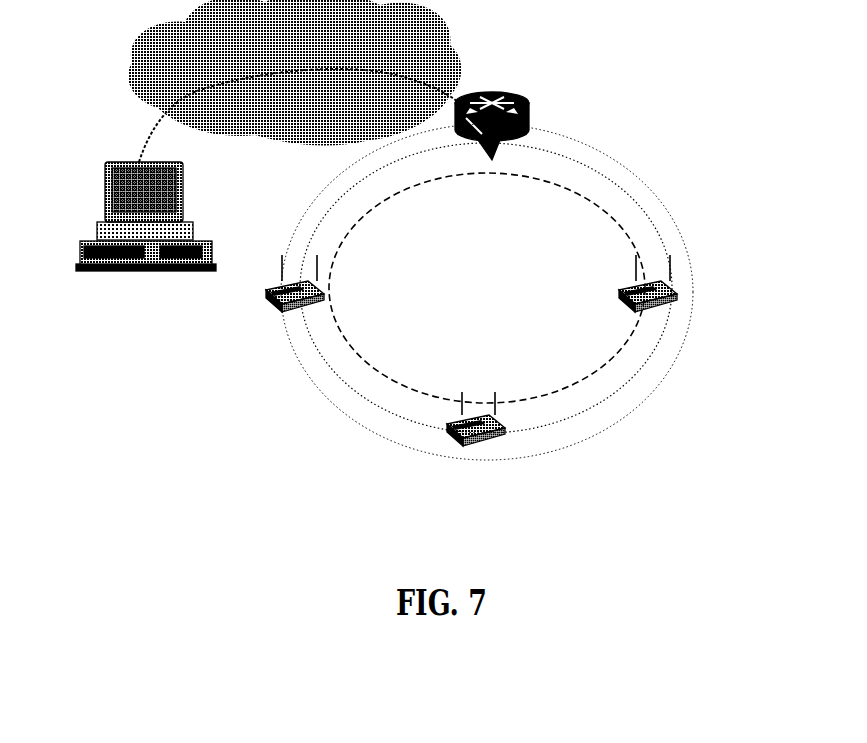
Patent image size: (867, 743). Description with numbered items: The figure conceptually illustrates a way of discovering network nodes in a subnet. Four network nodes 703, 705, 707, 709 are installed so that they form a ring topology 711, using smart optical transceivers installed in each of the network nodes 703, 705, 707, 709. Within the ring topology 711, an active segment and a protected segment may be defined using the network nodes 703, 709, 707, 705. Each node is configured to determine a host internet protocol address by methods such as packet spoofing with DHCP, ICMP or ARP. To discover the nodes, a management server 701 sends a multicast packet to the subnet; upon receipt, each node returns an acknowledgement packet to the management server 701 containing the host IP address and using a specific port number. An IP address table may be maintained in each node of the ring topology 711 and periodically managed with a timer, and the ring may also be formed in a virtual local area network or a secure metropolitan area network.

The management server 701 is at (108, 272).
The network node 703 is at (500, 95).
The network node 705 is at (290, 308).
The network node 707 is at (450, 432).
The network node 709 is at (672, 286).
The ring topology 711 is at (604, 193).